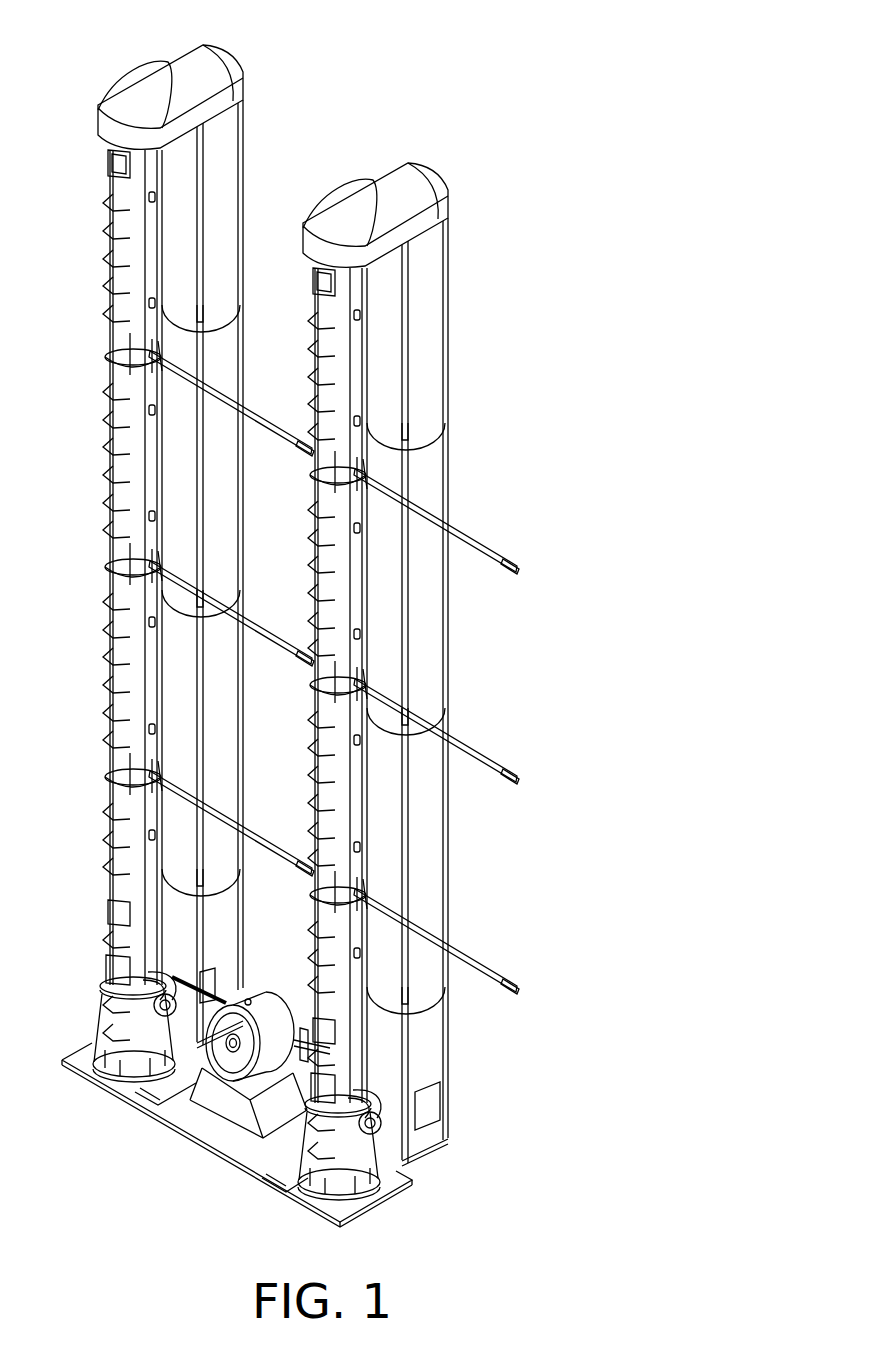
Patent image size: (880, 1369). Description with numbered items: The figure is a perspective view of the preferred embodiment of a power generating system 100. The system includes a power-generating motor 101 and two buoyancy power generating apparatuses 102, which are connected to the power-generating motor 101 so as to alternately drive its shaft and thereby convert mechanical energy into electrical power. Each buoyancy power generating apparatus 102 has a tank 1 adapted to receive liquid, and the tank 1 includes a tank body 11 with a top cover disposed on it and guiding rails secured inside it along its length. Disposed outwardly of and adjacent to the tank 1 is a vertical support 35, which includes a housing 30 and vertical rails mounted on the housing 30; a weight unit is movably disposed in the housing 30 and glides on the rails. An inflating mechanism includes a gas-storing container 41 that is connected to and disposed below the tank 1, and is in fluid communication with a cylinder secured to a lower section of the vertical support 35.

The power generating system 100 is at (435, 92).
The tank 1 is at (283, 605).
The tank body 11 is at (118, 213).
The buoyancy power generating apparatus 102 is at (142, 70).
The vertical support 35 is at (243, 112).
The housing 30 is at (430, 571).
The power-generating motor 101 is at (228, 1076).
The gas-storing container 41 is at (348, 1148).